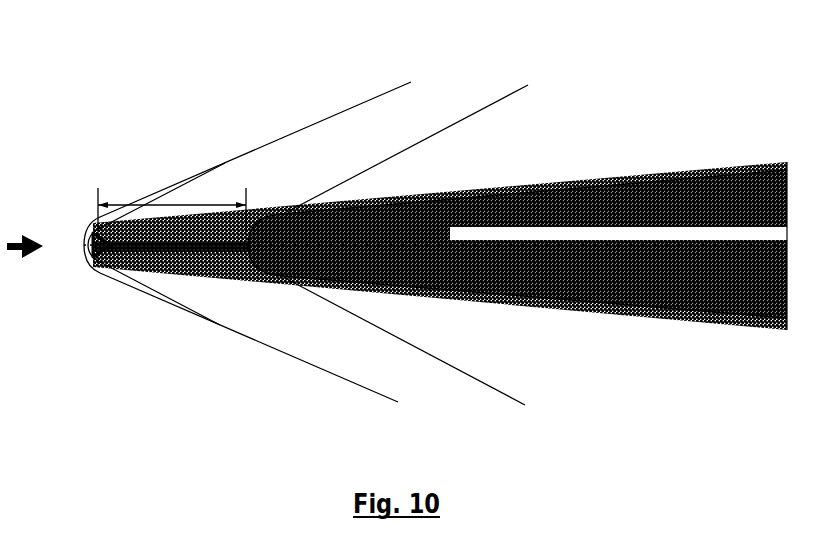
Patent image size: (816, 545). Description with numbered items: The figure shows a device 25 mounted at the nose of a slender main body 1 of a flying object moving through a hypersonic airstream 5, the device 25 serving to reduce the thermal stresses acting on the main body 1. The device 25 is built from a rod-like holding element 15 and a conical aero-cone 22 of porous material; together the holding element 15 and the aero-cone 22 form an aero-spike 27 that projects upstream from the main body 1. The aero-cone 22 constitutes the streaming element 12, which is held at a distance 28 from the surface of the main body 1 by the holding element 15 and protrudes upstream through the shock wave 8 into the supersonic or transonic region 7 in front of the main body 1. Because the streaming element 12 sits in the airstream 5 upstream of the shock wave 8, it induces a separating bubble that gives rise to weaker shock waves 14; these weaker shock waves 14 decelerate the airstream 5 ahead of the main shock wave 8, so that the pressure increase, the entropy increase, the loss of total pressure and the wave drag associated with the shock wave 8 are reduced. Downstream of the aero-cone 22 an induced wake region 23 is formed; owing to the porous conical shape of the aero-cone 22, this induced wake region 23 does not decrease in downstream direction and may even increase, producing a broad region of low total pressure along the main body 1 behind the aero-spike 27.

The main body 1 is at (687, 280).
The airstream 5 is at (13, 251).
The supersonic or transonic region 7 is at (97, 259).
The shock wave 8 is at (283, 335).
The streaming element 12 is at (105, 333).
The aero-cone 22 is at (100, 260).
The weaker shock waves 14 is at (445, 345).
The holding element 15 is at (435, 297).
The aero-spike 27 is at (177, 250).
The induced wake region 23 is at (235, 262).
The device 25 is at (227, 158).
The distance 28 is at (172, 209).